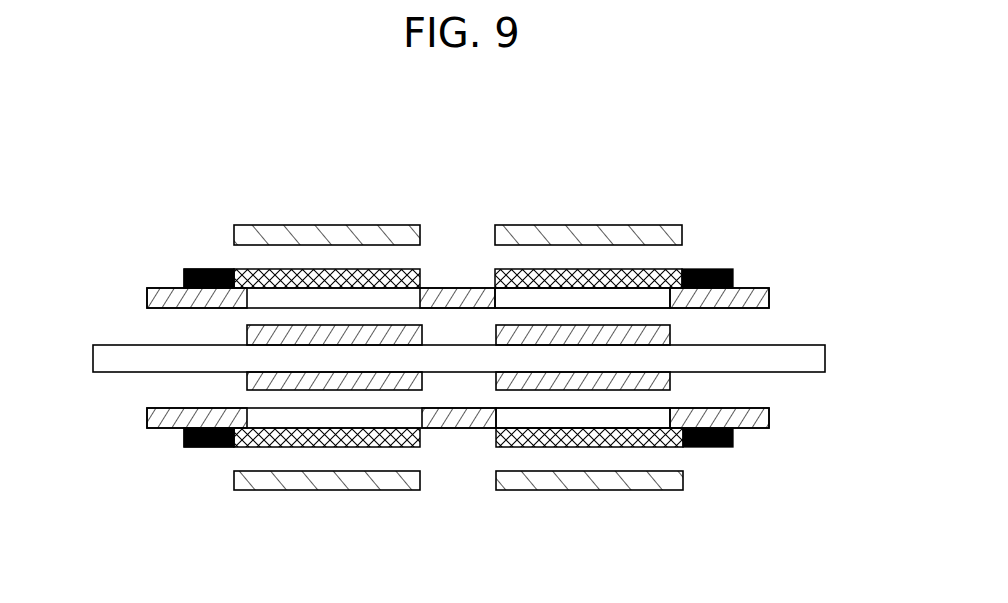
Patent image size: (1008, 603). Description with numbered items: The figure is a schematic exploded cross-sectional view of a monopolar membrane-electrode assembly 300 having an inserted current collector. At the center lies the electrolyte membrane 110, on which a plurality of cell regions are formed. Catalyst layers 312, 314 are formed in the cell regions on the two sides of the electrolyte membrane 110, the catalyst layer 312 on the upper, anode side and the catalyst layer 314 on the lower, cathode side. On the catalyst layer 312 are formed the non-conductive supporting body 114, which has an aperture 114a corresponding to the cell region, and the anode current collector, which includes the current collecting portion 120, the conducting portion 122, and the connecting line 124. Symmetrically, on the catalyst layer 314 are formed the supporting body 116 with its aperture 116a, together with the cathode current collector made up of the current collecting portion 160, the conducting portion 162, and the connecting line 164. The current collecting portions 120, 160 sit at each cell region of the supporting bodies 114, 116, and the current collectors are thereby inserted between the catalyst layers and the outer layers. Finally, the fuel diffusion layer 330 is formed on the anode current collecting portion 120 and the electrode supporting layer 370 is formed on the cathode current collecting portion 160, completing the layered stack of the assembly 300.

The monopolar membrane-electrode assembly 300 is at (195, 172).
The fuel diffusion layer 330 is at (353, 232).
The electrode supporting layer 370 is at (353, 478).
The electrolyte membrane 110 is at (815, 359).
The supporting body 114 is at (769, 290).
The aperture 114a is at (623, 297).
The supporting body 116 is at (770, 422).
The aperture 116a is at (640, 415).
The catalyst layer 312 is at (670, 330).
The catalyst layer 314 is at (657, 380).
The current collecting portion 120 is at (260, 277).
The conducting portion 122 is at (183, 273).
The connecting line 124 is at (138, 288).
The current collecting portion 160 is at (255, 445).
The conducting portion 162 is at (187, 442).
The connecting line 164 is at (209, 437).